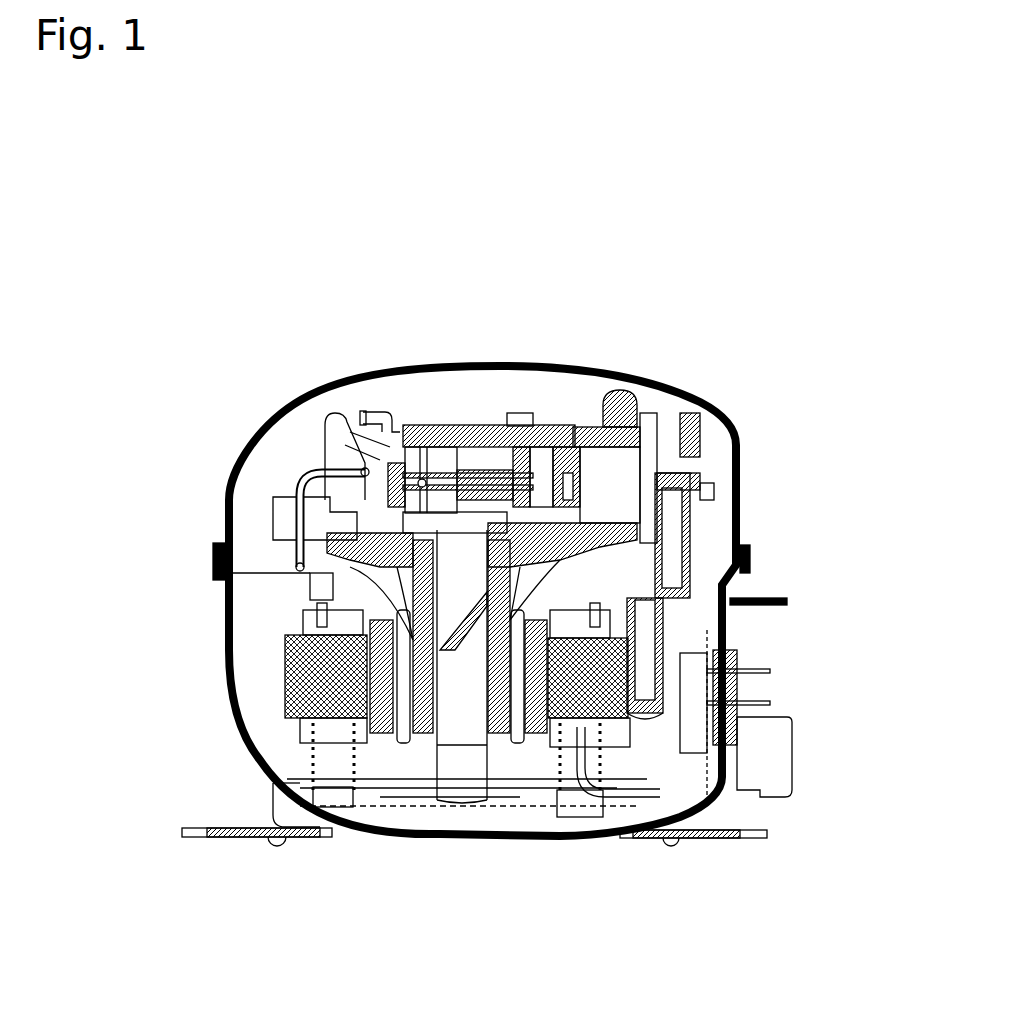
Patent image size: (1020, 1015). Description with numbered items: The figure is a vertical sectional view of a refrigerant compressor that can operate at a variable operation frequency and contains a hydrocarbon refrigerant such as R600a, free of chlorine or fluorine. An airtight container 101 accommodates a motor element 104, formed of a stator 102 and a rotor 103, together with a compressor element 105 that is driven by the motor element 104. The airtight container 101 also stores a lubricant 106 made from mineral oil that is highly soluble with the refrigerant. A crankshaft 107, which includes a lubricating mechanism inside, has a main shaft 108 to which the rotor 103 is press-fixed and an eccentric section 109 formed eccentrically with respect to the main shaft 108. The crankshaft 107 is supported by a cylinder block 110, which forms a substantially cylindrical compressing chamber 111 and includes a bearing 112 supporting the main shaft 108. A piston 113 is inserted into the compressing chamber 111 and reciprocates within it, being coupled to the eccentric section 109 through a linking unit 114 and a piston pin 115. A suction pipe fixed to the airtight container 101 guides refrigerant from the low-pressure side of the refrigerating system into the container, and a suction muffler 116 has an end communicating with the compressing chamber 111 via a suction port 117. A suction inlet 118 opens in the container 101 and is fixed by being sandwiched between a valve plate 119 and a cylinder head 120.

The airtight container 101 is at (520, 372).
The stator 102 is at (333, 677).
The rotor 103 is at (368, 605).
The motor element 104 is at (368, 693).
The compressor element 105 is at (648, 470).
The lubricant 106 is at (528, 800).
The crankshaft 107 is at (467, 553).
The main shaft 108 is at (450, 577).
The eccentric section 109 is at (443, 447).
The cylinder block 110 is at (423, 570).
The compressing chamber 111 is at (625, 490).
The bearing 112 is at (395, 577).
The piston 113 is at (600, 475).
The linking unit 114 is at (543, 463).
The piston pin 115 is at (580, 430).
The suction muffler 116 is at (727, 637).
The suction port 117 is at (698, 470).
The suction inlet 118 is at (738, 727).
The valve plate 119 is at (672, 478).
The cylinder head 120 is at (705, 483).